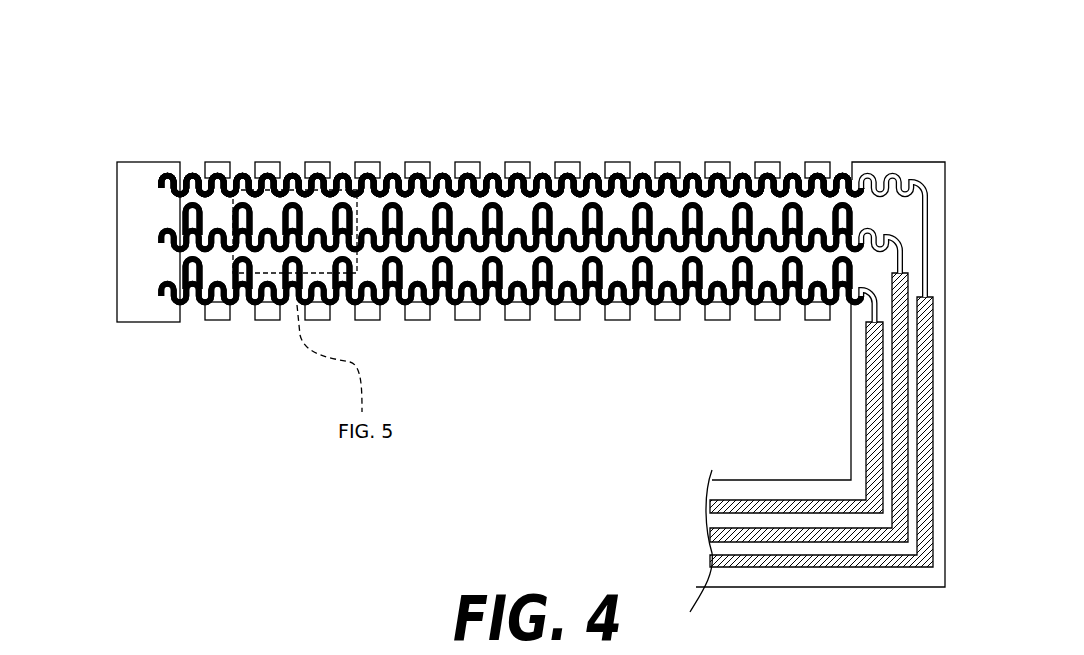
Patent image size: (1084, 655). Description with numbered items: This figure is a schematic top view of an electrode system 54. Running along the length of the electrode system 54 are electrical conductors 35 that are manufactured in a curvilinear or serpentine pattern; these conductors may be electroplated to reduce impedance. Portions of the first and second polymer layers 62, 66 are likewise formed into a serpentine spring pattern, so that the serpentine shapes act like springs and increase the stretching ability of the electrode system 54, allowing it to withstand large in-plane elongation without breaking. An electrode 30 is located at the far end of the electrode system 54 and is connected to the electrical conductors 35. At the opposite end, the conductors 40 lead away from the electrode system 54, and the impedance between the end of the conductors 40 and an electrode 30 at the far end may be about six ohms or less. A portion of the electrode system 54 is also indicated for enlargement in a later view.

The electrode system 54 is at (190, 122).
The electrode 30 is at (150, 183).
The first polymer layer 62 is at (543, 177).
The second polymer layer 66 is at (543, 177).
The electrical conductors 35 is at (548, 318).
The conductors 40 is at (775, 497).